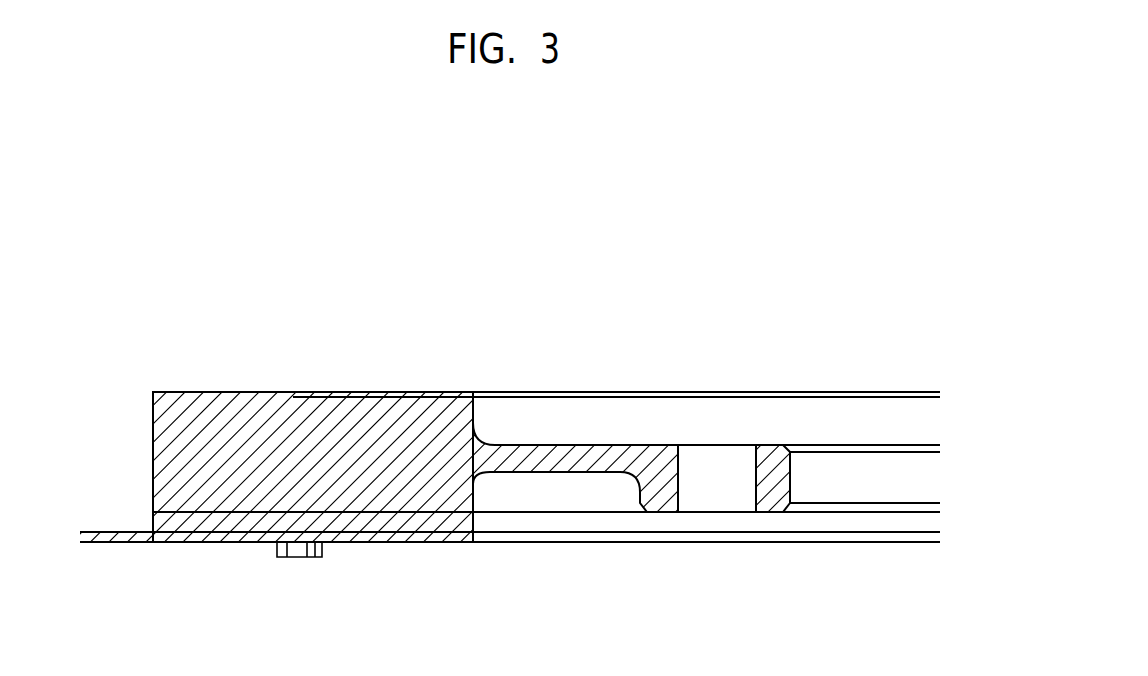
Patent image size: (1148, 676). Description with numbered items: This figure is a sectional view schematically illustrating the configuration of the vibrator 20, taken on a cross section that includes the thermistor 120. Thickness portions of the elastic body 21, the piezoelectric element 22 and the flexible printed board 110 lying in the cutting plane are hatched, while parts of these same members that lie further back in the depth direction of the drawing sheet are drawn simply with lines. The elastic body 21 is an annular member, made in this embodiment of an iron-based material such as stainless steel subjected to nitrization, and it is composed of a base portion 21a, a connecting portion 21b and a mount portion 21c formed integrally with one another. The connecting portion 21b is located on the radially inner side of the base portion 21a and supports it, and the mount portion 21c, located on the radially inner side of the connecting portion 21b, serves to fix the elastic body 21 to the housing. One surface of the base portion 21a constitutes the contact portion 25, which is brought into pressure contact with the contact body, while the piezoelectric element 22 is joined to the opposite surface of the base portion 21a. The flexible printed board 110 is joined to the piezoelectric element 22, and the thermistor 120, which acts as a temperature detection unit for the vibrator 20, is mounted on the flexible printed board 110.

The vibrator 20 is at (248, 247).
The elastic body 21 is at (710, 275).
The base portion 21a is at (420, 423).
The connecting portion 21b is at (537, 460).
The mount portion 21c is at (653, 460).
The piezoelectric element 22 is at (175, 527).
The contact portion 25 is at (233, 391).
The flexible printed board 110 is at (120, 543).
The thermistor 120 is at (295, 548).